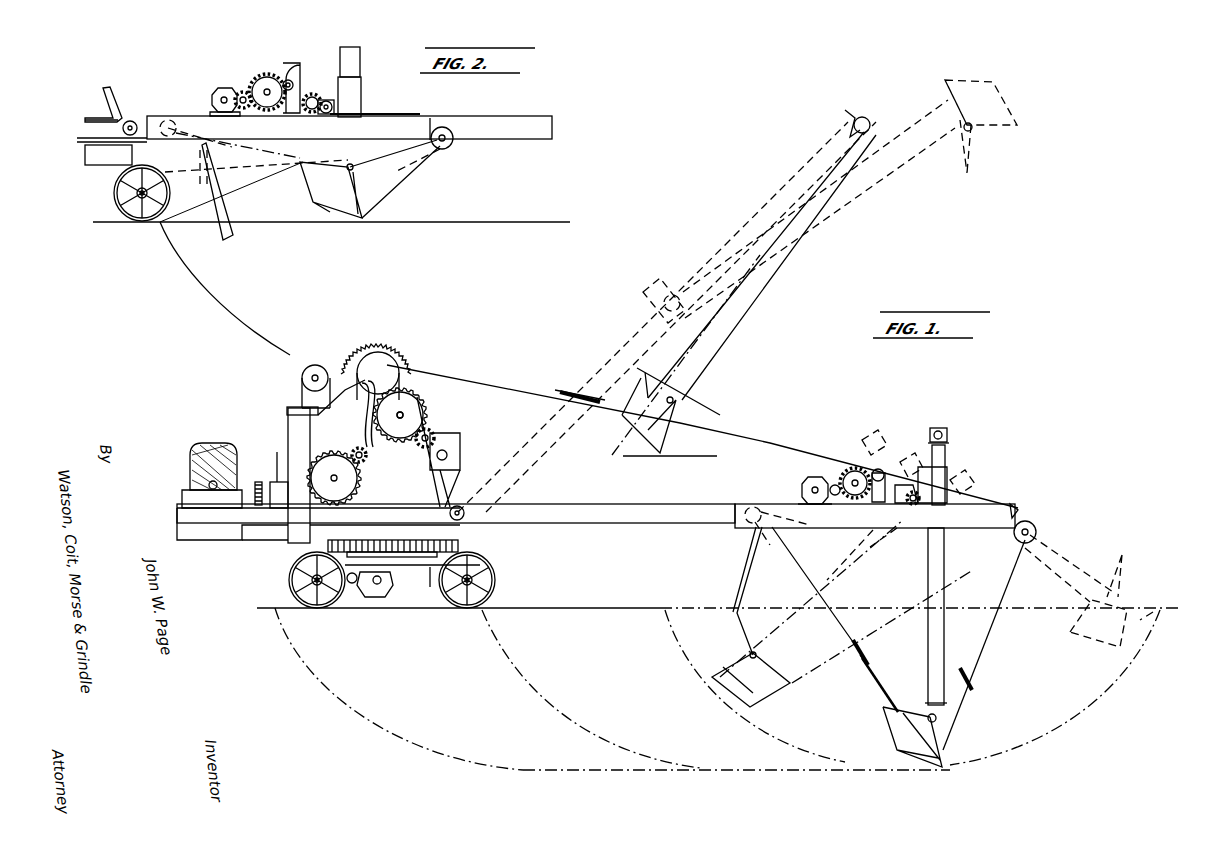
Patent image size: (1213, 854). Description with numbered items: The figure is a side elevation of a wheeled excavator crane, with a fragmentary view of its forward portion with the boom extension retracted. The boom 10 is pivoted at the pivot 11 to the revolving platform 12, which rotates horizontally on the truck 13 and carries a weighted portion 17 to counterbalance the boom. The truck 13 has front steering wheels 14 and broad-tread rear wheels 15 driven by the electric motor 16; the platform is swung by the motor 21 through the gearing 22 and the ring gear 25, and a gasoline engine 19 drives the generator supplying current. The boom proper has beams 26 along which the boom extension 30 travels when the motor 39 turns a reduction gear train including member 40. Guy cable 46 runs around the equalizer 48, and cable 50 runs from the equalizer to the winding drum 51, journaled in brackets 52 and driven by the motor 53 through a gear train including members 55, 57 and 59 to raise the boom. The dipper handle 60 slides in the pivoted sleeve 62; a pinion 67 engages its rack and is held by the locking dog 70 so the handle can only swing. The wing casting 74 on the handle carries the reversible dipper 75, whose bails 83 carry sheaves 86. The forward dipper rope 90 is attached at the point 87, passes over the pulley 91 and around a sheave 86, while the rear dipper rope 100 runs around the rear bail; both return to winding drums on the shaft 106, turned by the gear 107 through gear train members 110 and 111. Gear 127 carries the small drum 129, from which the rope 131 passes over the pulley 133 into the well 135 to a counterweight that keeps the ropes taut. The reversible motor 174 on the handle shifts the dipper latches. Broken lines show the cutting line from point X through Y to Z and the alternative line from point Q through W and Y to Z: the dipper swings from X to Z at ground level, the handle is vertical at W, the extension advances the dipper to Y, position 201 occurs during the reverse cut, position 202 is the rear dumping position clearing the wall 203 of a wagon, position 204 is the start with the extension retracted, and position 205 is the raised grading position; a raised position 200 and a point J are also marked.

In FIG. 2, the boom 10 is at (513, 121).
In FIG. 1, the boom 10 is at (732, 504).
In FIG. 2, the pivot 11 is at (132, 122).
In FIG. 1, the pivot 11 is at (463, 520).
In FIG. 1, the revolving platform 12 is at (273, 518).
In FIG. 2, the carriage or truck 13 is at (97, 163).
In FIG. 1, the carriage or truck 13 is at (432, 588).
In FIG. 2, the front steering wheels 14 is at (137, 218).
In FIG. 1, the front steering wheels 14 is at (492, 577).
In FIG. 1, the rear wheels 15 is at (293, 583).
In FIG. 1, the electric motor 16 is at (385, 595).
In FIG. 1, the enlarged weighted portion 17 is at (203, 530).
In FIG. 1, the gasoline engine 19 is at (208, 447).
In FIG. 1, the motor 21 is at (277, 490).
In FIG. 1, the gearing 22 is at (240, 467).
In FIG. 1, the ring gear 25 is at (333, 547).
In FIG. 2, the beams 26 is at (112, 131).
In FIG. 1, the beams 26 is at (583, 523).
In FIG. 2, the boom extension 30 is at (398, 118).
In FIG. 1, the boom extension 30 is at (751, 215).
In FIG. 2, the motor 39 is at (217, 98).
In FIG. 1, the motor 39 is at (808, 477).
In FIG. 1, the reduction gear train member 40 is at (880, 460).
In FIG. 2, the cable 46 is at (281, 74).
In FIG. 1, the cable 46 is at (760, 442).
In FIG. 1, the equalizer 48 is at (583, 408).
In FIG. 1, the cable 50 is at (517, 382).
In FIG. 1, the winding drum 51 is at (370, 363).
In FIG. 1, the brackets 52 is at (460, 462).
In FIG. 1, the motor 53 is at (456, 448).
In FIG. 1, the gear train member 55 is at (433, 430).
In FIG. 1, the gear train member 57 is at (417, 402).
In FIG. 1, the gear train member 59 is at (358, 348).
In FIG. 2, the dipper handle 60 is at (358, 57).
In FIG. 1, the dipper handle 60 is at (942, 637).
In FIG. 2, the sleeve 62 is at (361, 85).
In FIG. 1, the sleeve 62 is at (947, 477).
In FIG. 2, the pinion 67 is at (334, 103).
In FIG. 2, the locking dog or latch 70 is at (318, 95).
In FIG. 2, the wing casting 74 is at (367, 163).
In FIG. 1, the wing casting 74 is at (917, 707).
In FIG. 2, the dipper 75 is at (305, 198).
In FIG. 1, the dipper 75 is at (893, 728).
In FIG. 1, the bails 83 is at (877, 665).
In FIG. 1, the sheaves 86 is at (858, 645).
In FIG. 1, the point of attachment 87 is at (1030, 510).
In FIG. 2, the forward dipper rope 90 is at (408, 178).
In FIG. 1, the forward dipper rope 90 is at (997, 627).
In FIG. 2, the pulley 91 is at (450, 142).
In FIG. 1, the pulley 91 is at (1037, 527).
In FIG. 2, the rear dipper rope 100 is at (185, 145).
In FIG. 1, the rear dipper rope 100 is at (800, 575).
In FIG. 1, the shaft 106 is at (333, 481).
In FIG. 1, the gear 107 is at (357, 482).
In FIG. 1, the gear train member 110 is at (368, 440).
In FIG. 1, the gear train member 111 is at (366, 457).
In FIG. 1, the gear 127 is at (400, 415).
In FIG. 1, the small drum or pulley 129 is at (370, 427).
In FIG. 1, the rope or cable 131 is at (340, 405).
In FIG. 1, the pulley 133 is at (305, 373).
In FIG. 1, the well 135 is at (298, 420).
In FIG. 1, the reversible motor 174 is at (943, 430).
In FIG. 1, the bucket raised position 200 is at (1000, 102).
In FIG. 1, the dipper position 201 is at (758, 688).
In FIG. 1, the dipper dumping position 202 is at (622, 443).
In FIG. 1, the wall 203 is at (683, 457).
In FIG. 2, the dipper position 204 is at (190, 193).
In FIG. 2, the dipper position 205 is at (338, 202).
In FIG. 1, the point J is at (290, 632).
In FIG. 2, the point Q is at (216, 288).
In FIG. 1, the point Q is at (482, 610).
In FIG. 1, the point W is at (627, 770).
In FIG. 1, the point X is at (752, 677).
In FIG. 1, the point Y is at (917, 767).
In FIG. 1, the point Z is at (1160, 610).